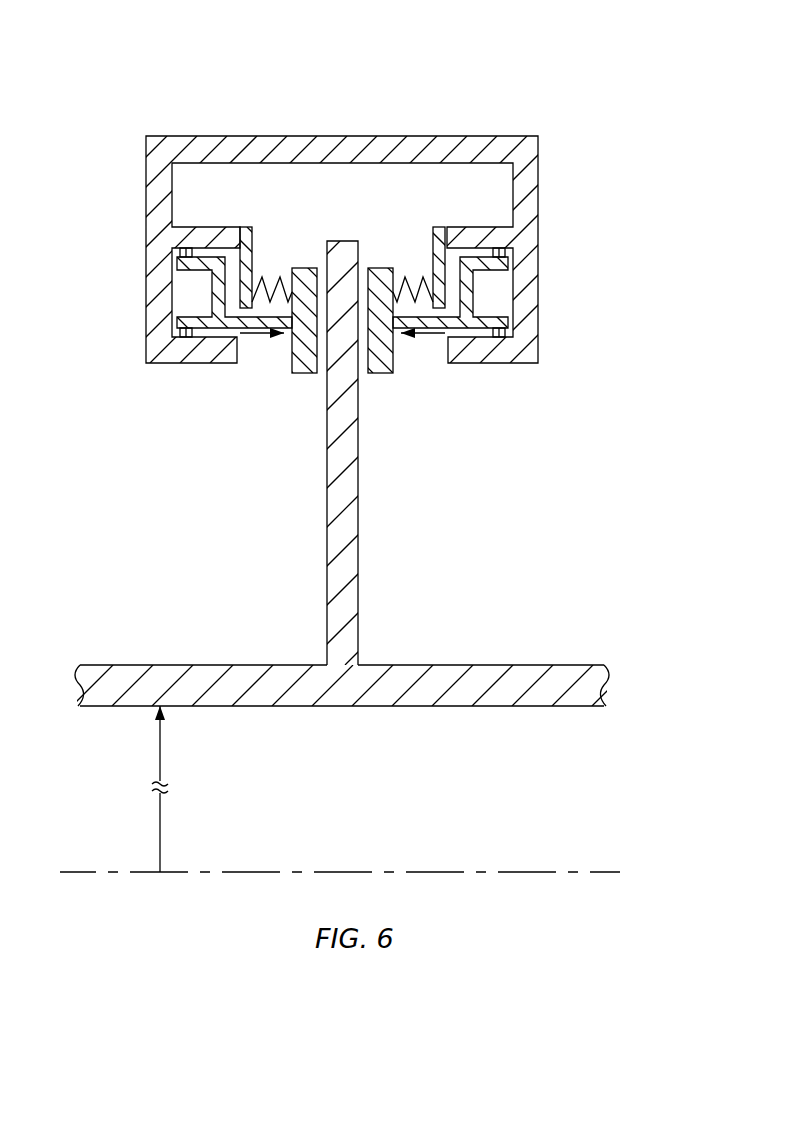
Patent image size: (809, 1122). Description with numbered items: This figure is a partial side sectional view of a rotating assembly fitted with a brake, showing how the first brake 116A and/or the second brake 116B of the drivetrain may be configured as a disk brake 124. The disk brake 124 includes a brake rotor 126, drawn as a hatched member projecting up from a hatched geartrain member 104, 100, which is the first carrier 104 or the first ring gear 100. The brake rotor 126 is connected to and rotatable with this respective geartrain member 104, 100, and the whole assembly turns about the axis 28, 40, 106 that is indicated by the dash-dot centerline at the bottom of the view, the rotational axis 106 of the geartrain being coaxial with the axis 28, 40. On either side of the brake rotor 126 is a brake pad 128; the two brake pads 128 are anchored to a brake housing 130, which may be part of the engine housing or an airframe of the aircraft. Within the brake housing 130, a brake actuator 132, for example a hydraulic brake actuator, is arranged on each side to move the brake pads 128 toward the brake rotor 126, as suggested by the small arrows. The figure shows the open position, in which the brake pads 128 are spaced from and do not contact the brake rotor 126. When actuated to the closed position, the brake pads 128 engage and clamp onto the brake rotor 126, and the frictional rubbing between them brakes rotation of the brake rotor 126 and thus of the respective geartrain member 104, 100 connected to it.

The first brake 116A is at (384, 348).
The second brake 116B is at (384, 348).
The disk brake 124 is at (673, 58).
The brake housing 130 is at (460, 136).
The brake actuator 132 is at (181, 294).
The brake pad 128 is at (297, 381).
The brake rotor 126 is at (366, 517).
The first ring gear 100 is at (332, 721).
The first carrier 104 is at (520, 706).
The axis 28 is at (420, 808).
The axis 40 is at (420, 808).
The rotational axis 106 is at (603, 873).